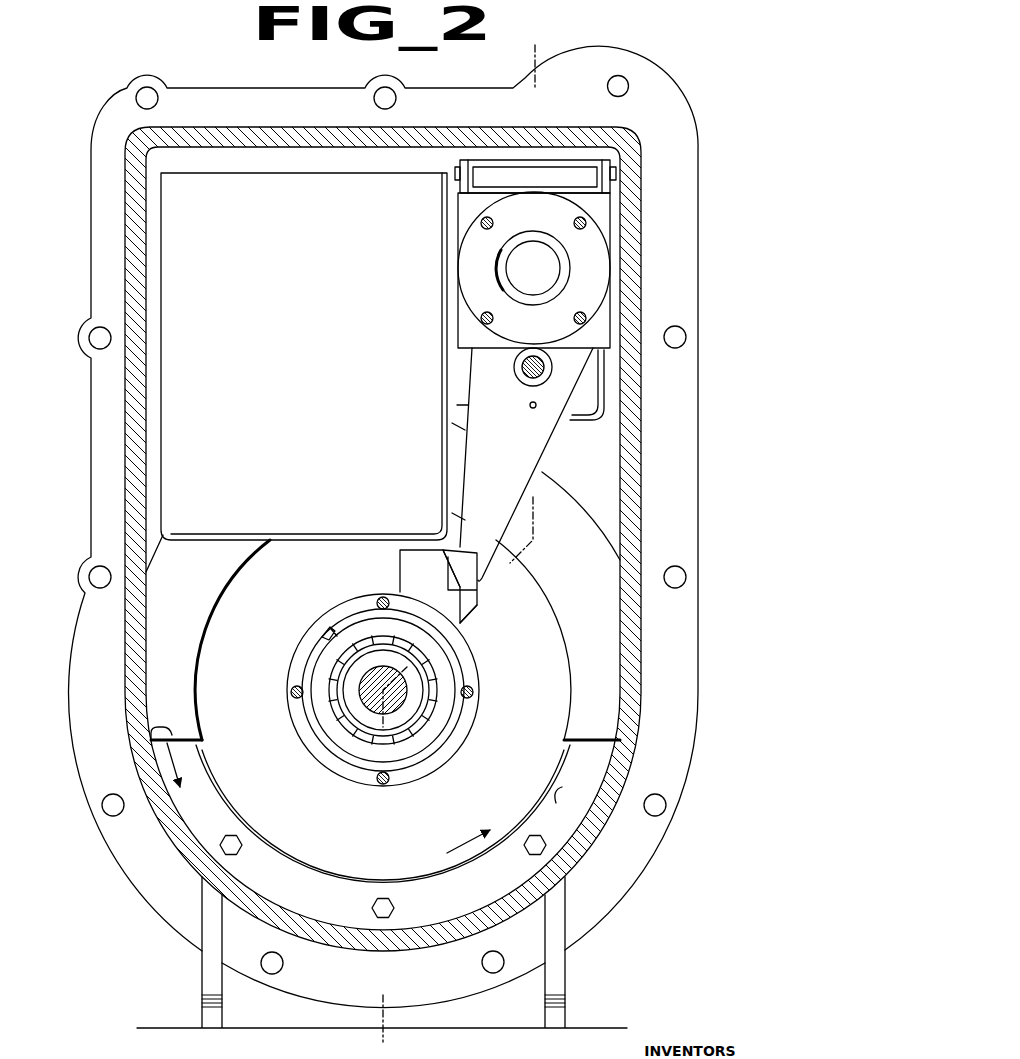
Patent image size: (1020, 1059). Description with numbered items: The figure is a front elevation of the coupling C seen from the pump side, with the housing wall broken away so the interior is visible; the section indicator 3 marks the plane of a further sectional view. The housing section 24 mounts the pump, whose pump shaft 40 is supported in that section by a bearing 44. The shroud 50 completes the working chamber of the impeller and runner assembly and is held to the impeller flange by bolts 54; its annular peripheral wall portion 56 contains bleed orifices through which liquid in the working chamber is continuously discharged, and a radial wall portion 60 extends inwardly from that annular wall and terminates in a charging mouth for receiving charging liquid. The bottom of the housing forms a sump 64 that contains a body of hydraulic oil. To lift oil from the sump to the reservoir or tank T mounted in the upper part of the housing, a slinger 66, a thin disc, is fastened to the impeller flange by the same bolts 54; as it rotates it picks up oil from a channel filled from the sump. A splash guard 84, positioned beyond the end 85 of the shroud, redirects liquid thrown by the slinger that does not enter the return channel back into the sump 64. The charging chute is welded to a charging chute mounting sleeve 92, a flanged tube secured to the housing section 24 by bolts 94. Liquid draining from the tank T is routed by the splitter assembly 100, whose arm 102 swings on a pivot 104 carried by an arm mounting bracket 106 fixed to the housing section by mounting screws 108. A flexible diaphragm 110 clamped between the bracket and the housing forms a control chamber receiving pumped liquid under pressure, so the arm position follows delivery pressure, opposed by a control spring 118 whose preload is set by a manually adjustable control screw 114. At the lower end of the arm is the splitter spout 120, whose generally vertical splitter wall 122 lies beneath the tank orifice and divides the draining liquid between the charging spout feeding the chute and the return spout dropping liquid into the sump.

The coupling C is at (93, 100).
The reservoir or tank T is at (316, 343).
The section line 3- 3 is at (568, 52).
The housing section 24 is at (130, 278).
The pump shaft 40 is at (367, 698).
The bearing 44 is at (352, 742).
The shroud 50 is at (295, 567).
The bolts 54 is at (527, 850).
The annular peripheral wall portion 56 is at (565, 808).
The radial wall portion 60 is at (414, 848).
The sump 64 is at (343, 927).
The slinger 66 is at (582, 777).
The splash guard 84 is at (558, 593).
The end of the shroud 85 is at (160, 730).
The charging chute mounting sleeve 92 is at (352, 786).
The bolts 94 is at (466, 700).
The splitter assembly 100 is at (397, 563).
The splitter arm 102 is at (487, 477).
The pivot 104 is at (566, 173).
The arm mounting bracket 106 is at (460, 187).
The mounting screws 108 is at (580, 310).
The flexible diaphragm 110 is at (518, 281).
The control screw 114 is at (527, 378).
The control spring 118 is at (530, 407).
The splitter spout 120 is at (478, 619).
The splitter wall 122 is at (477, 552).